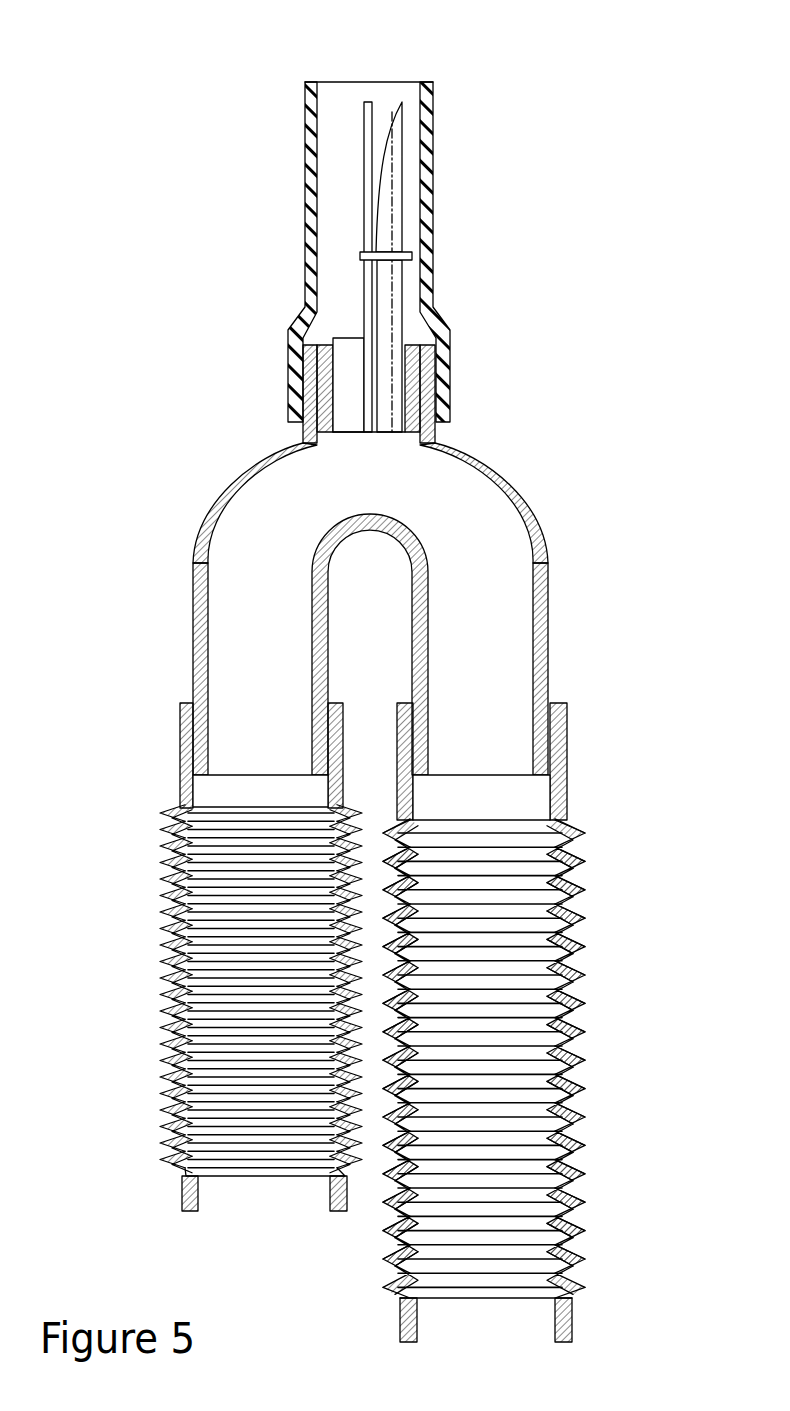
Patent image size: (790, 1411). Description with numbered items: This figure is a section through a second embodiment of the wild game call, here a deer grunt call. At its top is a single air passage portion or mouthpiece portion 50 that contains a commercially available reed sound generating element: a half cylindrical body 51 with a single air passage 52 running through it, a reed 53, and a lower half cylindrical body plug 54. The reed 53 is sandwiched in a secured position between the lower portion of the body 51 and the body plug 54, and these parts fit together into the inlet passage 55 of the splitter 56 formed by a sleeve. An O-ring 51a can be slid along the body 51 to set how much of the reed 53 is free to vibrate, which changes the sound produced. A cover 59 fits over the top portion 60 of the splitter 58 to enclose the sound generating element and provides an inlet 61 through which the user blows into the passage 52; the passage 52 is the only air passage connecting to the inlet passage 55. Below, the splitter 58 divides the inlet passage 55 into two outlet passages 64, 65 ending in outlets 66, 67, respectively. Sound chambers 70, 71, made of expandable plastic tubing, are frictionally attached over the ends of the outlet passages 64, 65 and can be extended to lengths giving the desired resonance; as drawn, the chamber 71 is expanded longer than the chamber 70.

The mouthpiece portion 50 is at (363, 231).
The half cylindrical body 51 is at (399, 188).
The O-ring 51a is at (386, 250).
The air passage 52 is at (385, 165).
The reed 53 is at (373, 108).
The body plug 54 is at (352, 403).
The inlet passage 55 is at (397, 441).
The splitter 56 is at (407, 375).
The splitter 58 is at (369, 876).
The cover 59 is at (303, 152).
The top portion 60 is at (310, 375).
The inlet 61 is at (346, 82).
The outlet passage 64 is at (247, 573).
The outlet passage 65 is at (500, 577).
The outlet 66 is at (263, 775).
The outlet 67 is at (483, 773).
The sound chamber 70 is at (165, 905).
The sound chamber 71 is at (578, 928).